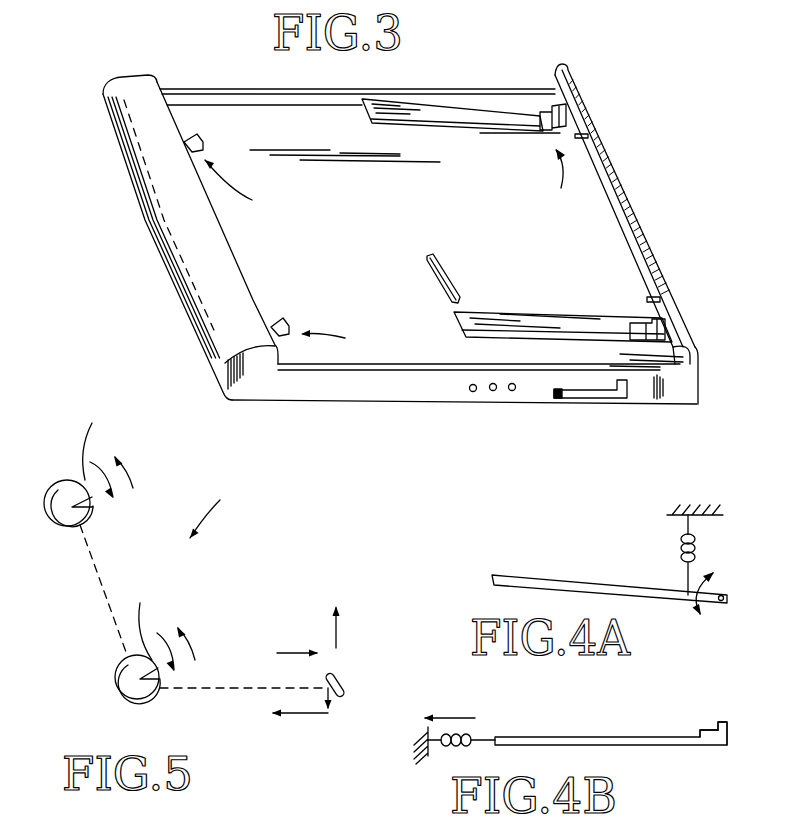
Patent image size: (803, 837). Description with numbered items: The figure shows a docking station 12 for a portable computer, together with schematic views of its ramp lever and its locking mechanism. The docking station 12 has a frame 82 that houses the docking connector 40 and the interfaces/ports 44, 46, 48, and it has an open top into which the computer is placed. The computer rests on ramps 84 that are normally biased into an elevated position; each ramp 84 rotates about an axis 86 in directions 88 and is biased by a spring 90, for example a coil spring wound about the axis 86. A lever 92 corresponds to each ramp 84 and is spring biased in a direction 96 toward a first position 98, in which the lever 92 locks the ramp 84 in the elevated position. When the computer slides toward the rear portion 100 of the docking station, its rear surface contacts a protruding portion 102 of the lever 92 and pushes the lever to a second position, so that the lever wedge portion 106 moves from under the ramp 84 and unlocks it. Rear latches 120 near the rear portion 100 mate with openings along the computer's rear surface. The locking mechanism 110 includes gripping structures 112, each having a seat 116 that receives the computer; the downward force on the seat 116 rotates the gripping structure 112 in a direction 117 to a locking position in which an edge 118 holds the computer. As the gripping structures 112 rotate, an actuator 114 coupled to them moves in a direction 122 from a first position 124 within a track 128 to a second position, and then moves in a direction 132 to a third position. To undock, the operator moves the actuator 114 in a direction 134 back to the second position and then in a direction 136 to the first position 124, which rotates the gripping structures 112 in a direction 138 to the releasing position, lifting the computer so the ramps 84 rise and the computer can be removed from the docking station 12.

In FIG. 3, the docking station 12 is at (660, 125).
In FIG. 3, the docking connector 40 is at (427, 268).
In FIG. 3, the interface/port 44 is at (470, 392).
In FIG. 3, the interface/port 46 is at (491, 391).
In FIG. 3, the interface/port 48 is at (512, 391).
In FIG. 3, the frame 82 is at (145, 222).
In FIG. 3, the ramp 84 is at (364, 108).
In FIG. 4A, the ramp 84 is at (514, 576).
In FIG. 4A, the axis 86 is at (723, 599).
In FIG. 4A, the direction 88 is at (715, 575).
In FIG. 4A, the spring 90 is at (700, 540).
In FIG. 3, the lever 92 is at (545, 130).
In FIG. 4B, the lever 92 is at (641, 746).
In FIG. 4B, the direction 96 is at (463, 696).
In FIG. 3, the first position 98 is at (561, 182).
In FIG. 3, the rear portion 100 is at (626, 222).
In FIG. 4B, the protruding portion 102 is at (728, 725).
In FIG. 4B, the lever wedge portion 106 is at (703, 729).
In FIG. 5, the locking mechanism 110 is at (204, 588).
In FIG. 3, the gripping structure 112 is at (293, 255).
In FIG. 5, the gripping structure 112 is at (65, 485).
In FIG. 3, the actuator 114 is at (589, 423).
In FIG. 5, the actuator 114 is at (338, 677).
In FIG. 3, the seat 116 is at (200, 140).
In FIG. 5, the seat 116 is at (93, 507).
In FIG. 5, the direction 117 is at (101, 460).
In FIG. 5, the edge 118 is at (114, 529).
In FIG. 3, the rear latch 120 is at (578, 133).
In FIG. 5, the direction 122 is at (298, 651).
In FIG. 3, the first position 124 is at (557, 398).
In FIG. 3, the track 128 is at (576, 390).
In FIG. 5, the direction 132 is at (340, 633).
In FIG. 5, the direction 134 is at (335, 697).
In FIG. 5, the direction 136 is at (298, 716).
In FIG. 5, the direction 138 is at (130, 468).